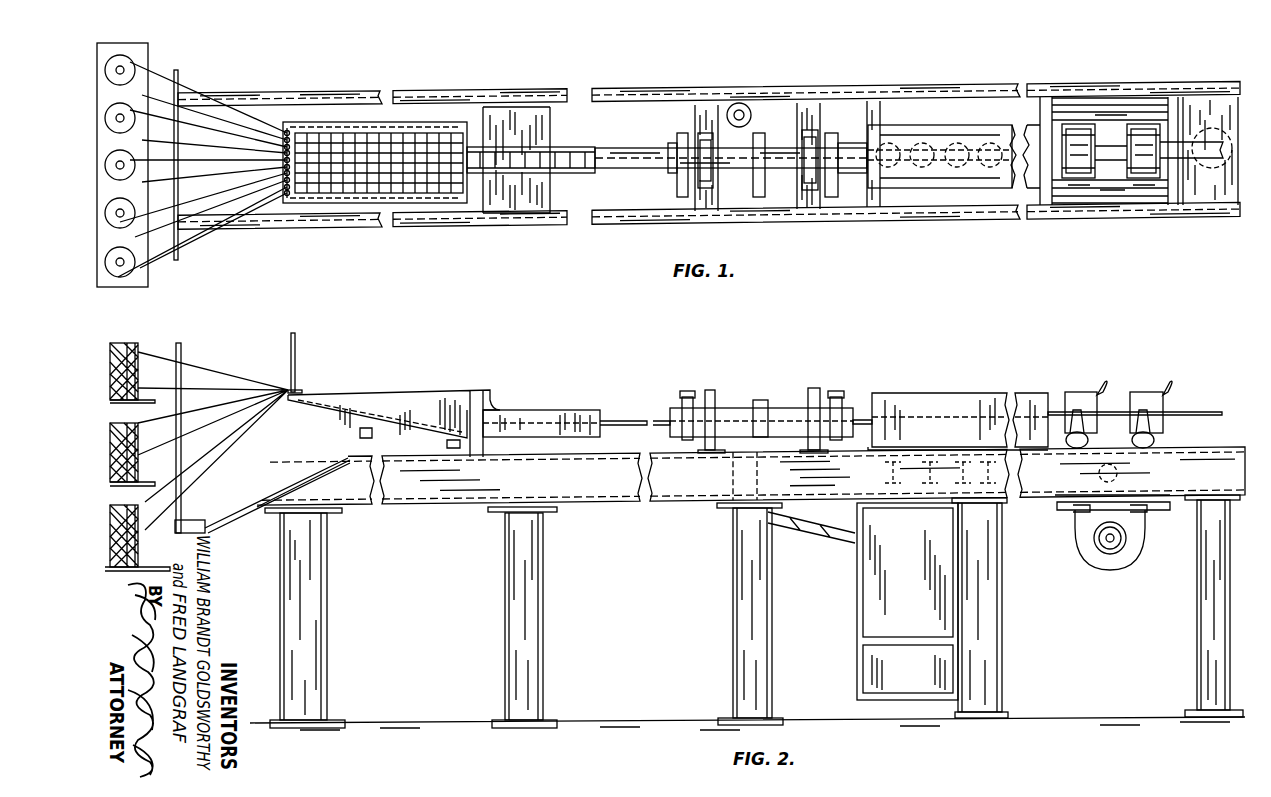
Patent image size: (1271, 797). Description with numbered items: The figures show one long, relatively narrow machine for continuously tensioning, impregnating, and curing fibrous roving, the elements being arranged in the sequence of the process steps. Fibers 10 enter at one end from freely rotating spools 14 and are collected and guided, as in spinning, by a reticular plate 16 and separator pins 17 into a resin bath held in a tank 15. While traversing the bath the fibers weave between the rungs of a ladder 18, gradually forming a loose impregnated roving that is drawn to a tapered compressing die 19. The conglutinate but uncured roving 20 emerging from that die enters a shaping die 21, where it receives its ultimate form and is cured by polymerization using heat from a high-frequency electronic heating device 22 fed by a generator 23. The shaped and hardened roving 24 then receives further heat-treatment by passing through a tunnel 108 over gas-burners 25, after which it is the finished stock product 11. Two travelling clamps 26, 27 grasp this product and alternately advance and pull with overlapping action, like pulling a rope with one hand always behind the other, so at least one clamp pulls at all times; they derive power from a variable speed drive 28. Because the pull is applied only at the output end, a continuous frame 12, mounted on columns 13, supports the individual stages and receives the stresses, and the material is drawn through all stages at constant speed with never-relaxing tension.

In FIG. 1, the fibers 10 is at (190, 80).
In FIG. 2, the fibers 10 is at (205, 352).
In FIG. 1, the finished product 11 is at (1200, 146).
In FIG. 2, the finished product 11 is at (1190, 412).
In FIG. 1, the continuous frame 12 is at (496, 93).
In FIG. 2, the continuous frame 12 is at (600, 500).
In FIG. 2, the columns 13 is at (545, 600).
In FIG. 1, the spools 14 is at (132, 56).
In FIG. 2, the spools 14 is at (140, 550).
In FIG. 1, the tank 15 is at (420, 122).
In FIG. 2, the tank 15 is at (386, 392).
In FIG. 1, the reticular plate 16 is at (180, 258).
In FIG. 2, the reticular plate 16 is at (182, 428).
In FIG. 1, the separator pins 17 is at (287, 130).
In FIG. 2, the separator pins 17 is at (296, 345).
In FIG. 1, the ladder 18 is at (383, 135).
In FIG. 1, the tapered compressing die 19 is at (585, 150).
In FIG. 2, the tapered compressing die 19 is at (538, 410).
In FIG. 1, the uncured roving 20 is at (638, 150).
In FIG. 2, the uncured roving 20 is at (620, 421).
In FIG. 1, the shaping die 21 is at (705, 125).
In FIG. 2, the shaping die 21 is at (718, 410).
In FIG. 1, the high-frequency electronic heating device 22 is at (772, 128).
In FIG. 2, the high-frequency electronic heating device 22 is at (772, 405).
In FIG. 2, the generator 23 is at (857, 585).
In FIG. 1, the hardened roving 24 is at (853, 145).
In FIG. 2, the hardened roving 24 is at (860, 418).
In FIG. 1, the gas-burners 25 is at (957, 140).
In FIG. 2, the gas-burners 25 is at (888, 464).
In FIG. 1, the travelling clamp 26 is at (1078, 125).
In FIG. 2, the travelling clamp 26 is at (1078, 392).
In FIG. 1, the travelling clamp 27 is at (1140, 125).
In FIG. 2, the travelling clamp 27 is at (1143, 392).
In FIG. 2, the variable speed drive 28 is at (1133, 565).
In FIG. 1, the tunnel 108 is at (905, 126).
In FIG. 2, the tunnel 108 is at (935, 395).